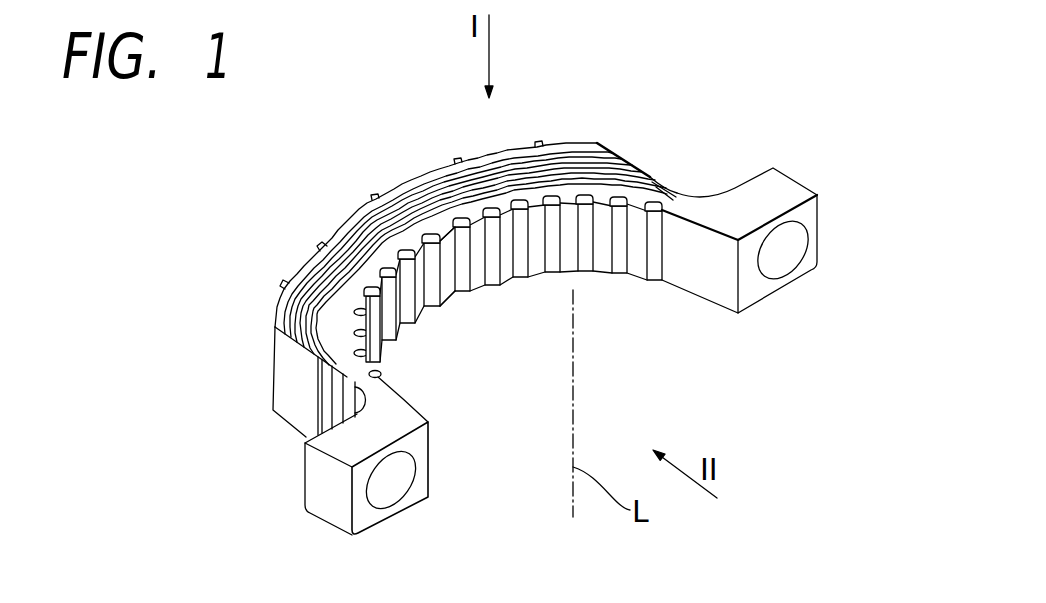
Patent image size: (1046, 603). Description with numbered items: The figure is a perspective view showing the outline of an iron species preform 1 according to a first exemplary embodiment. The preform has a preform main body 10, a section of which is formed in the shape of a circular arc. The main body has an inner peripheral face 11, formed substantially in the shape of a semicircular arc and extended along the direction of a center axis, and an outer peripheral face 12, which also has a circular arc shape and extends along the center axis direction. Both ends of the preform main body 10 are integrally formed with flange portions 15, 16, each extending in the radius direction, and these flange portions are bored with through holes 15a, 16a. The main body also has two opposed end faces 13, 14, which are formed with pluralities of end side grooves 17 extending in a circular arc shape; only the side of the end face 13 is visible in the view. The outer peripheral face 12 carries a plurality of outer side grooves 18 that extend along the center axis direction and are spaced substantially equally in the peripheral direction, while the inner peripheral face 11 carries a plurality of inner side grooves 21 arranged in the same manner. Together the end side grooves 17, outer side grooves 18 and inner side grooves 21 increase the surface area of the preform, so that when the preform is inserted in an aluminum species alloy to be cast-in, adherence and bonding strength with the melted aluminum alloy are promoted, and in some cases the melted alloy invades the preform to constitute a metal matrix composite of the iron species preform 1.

The iron species preform 1 is at (629, 106).
The preform main body 10 is at (369, 164).
The inner peripheral face 11 is at (447, 295).
The outer peripheral face 12 is at (421, 170).
The end face 13 is at (507, 153).
The end face 14 is at (503, 287).
The flange portion 15 is at (303, 477).
The through hole 15a is at (390, 493).
The flange portion 16 is at (755, 175).
The through hole 16a is at (790, 262).
The end side groove 17 is at (360, 228).
The outer side groove 18 is at (458, 160).
The inner side groove 21 is at (432, 310).